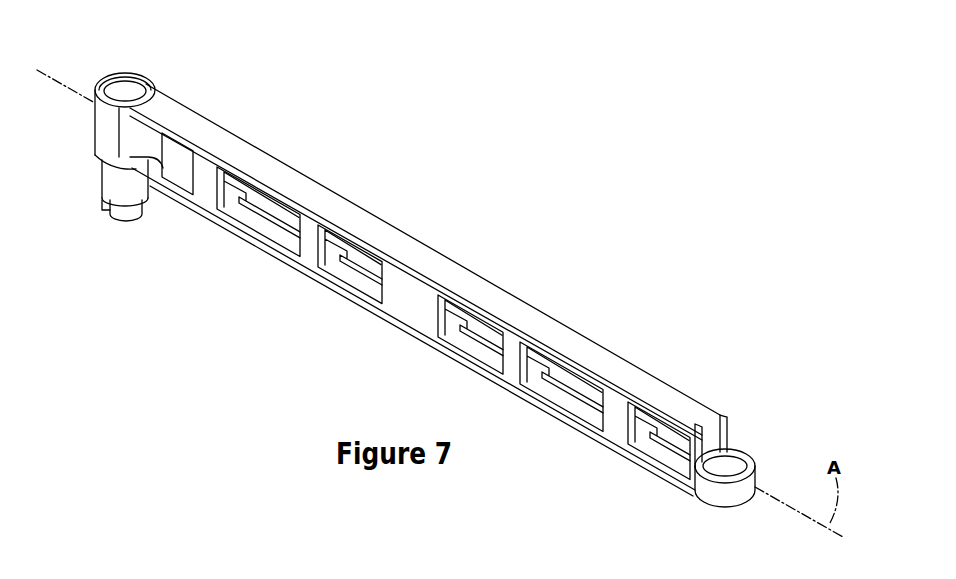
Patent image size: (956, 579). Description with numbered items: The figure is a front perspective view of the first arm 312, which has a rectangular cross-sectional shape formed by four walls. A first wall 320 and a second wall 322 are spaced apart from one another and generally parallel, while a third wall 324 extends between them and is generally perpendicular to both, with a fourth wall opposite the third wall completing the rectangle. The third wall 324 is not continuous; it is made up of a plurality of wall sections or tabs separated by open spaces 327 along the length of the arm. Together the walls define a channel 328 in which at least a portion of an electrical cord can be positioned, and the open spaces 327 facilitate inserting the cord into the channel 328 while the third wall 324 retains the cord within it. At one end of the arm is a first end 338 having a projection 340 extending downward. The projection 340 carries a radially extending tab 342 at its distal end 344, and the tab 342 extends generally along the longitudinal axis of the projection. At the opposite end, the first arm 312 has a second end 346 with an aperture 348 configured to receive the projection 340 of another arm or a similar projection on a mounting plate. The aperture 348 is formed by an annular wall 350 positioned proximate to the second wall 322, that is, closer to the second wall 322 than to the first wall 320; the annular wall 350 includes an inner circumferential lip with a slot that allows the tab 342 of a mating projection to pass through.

The first arm 312 is at (431, 307).
The first wall 320 is at (457, 277).
The second wall 322 is at (273, 235).
The third wall 324 is at (415, 305).
The open spaces 327 is at (348, 293).
The channel 328 is at (648, 440).
The first end 338 is at (149, 58).
The projection 340 is at (117, 182).
The tab 342 is at (756, 0).
The distal end 344 is at (123, 213).
The second end 346 is at (766, 464).
The aperture 348 is at (738, 452).
The annular wall 350 is at (732, 493).